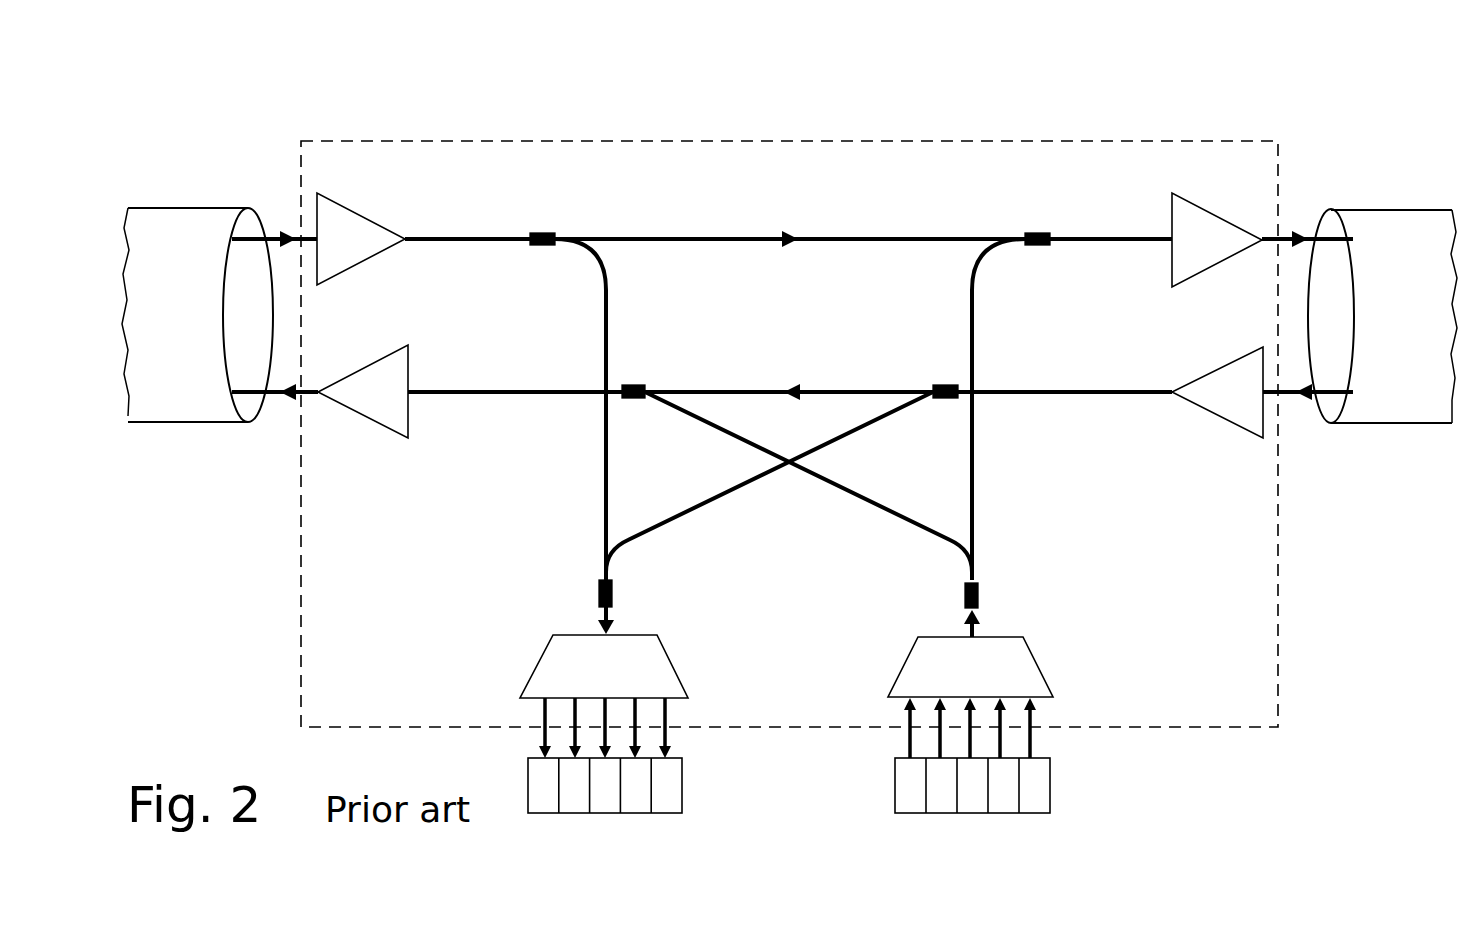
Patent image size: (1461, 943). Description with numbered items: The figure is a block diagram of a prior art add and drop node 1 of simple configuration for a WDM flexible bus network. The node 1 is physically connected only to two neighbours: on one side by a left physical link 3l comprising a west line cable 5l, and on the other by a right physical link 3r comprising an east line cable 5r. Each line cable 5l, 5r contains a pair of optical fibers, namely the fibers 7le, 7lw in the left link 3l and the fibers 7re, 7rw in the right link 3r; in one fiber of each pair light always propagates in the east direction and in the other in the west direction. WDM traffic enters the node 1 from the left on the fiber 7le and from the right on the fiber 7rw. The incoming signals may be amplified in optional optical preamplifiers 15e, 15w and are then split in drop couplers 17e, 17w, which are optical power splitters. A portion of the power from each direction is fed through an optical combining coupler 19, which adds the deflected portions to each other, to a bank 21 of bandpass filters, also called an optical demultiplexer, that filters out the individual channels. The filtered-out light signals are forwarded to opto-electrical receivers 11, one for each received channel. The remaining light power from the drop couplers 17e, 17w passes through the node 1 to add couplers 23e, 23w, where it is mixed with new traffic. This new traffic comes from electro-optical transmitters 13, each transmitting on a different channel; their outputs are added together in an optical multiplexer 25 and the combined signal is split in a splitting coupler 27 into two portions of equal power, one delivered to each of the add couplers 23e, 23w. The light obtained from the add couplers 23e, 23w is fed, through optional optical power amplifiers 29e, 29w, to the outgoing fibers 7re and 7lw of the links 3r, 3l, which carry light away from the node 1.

The add and drop node 1 is at (301, 555).
The left physical link 3l is at (198, 162).
The right physical link 3r is at (1390, 175).
The west line cable 5l is at (188, 423).
The east line cable 5r is at (1415, 424).
The left east fiber 7le is at (268, 230).
The left west fiber 7lw is at (272, 398).
The right east fiber 7re is at (1306, 231).
The right west fiber 7rw is at (1291, 398).
The optical preamplifier 15e is at (364, 219).
The optical preamplifier 15w is at (1201, 410).
The drop coupler 17e is at (547, 232).
The drop coupler 17w is at (942, 398).
The add coupler 23e is at (1040, 246).
The add coupler 23w is at (630, 398).
The optical power amplifier 29e is at (1212, 216).
The optical power amplifier 29w is at (374, 414).
The optical combining coupler 19 is at (597, 594).
The splitting coupler 27 is at (980, 594).
The bank of filters 21 is at (664, 667).
The optical multiplexer 25 is at (1010, 641).
The receivers 11 is at (676, 764).
The transmitters 13 is at (1042, 764).